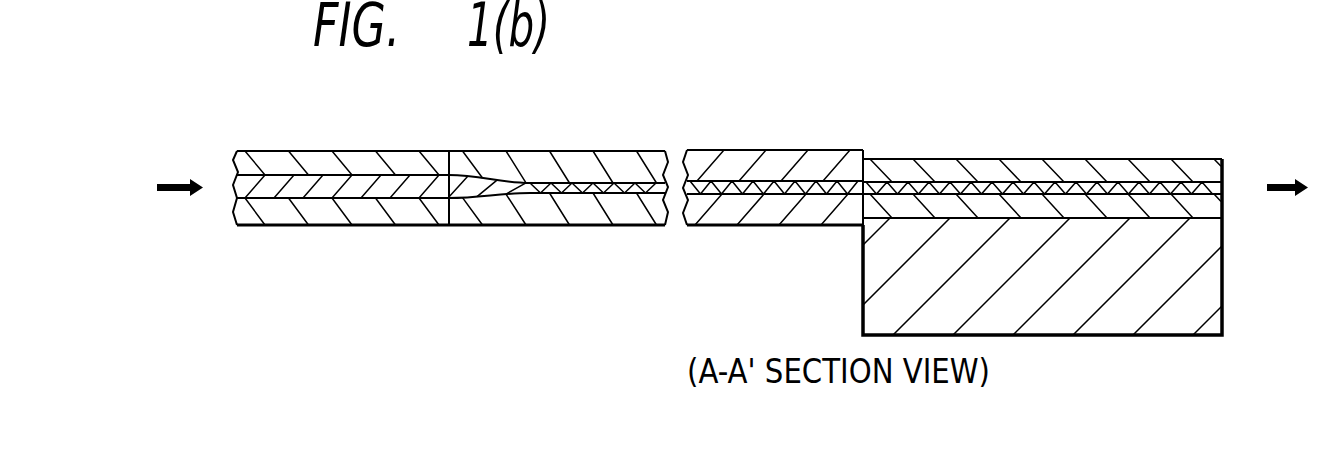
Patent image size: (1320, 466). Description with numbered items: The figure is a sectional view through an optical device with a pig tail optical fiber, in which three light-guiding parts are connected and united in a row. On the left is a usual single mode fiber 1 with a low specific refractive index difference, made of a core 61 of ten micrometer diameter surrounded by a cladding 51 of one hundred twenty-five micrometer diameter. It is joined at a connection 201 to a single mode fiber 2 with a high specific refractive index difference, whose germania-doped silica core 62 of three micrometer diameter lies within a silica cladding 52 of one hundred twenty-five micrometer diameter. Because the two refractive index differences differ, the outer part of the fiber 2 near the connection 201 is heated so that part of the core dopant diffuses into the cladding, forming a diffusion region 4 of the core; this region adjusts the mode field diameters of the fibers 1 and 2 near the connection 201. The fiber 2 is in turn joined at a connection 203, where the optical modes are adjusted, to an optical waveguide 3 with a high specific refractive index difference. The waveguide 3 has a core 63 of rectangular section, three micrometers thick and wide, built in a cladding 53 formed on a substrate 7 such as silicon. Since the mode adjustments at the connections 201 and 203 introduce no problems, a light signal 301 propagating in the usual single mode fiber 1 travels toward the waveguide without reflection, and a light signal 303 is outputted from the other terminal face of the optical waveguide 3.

The usual single mode fiber 1 is at (450, 186).
The single mode fiber with a high specific refractive index difference 2 is at (809, 205).
The optical waveguide 3 is at (1069, 143).
The diffusion region 4 is at (532, 122).
The substrate 7 is at (1207, 307).
The cladding 51 is at (287, 217).
The cladding 52 is at (772, 160).
The cladding 53 is at (983, 167).
The core 61 is at (322, 185).
The core 62 is at (608, 193).
The core 63 is at (1200, 187).
The connection 201 is at (450, 205).
The connection 203 is at (867, 173).
The light signal 301 is at (168, 193).
The light signal 303 is at (1277, 193).